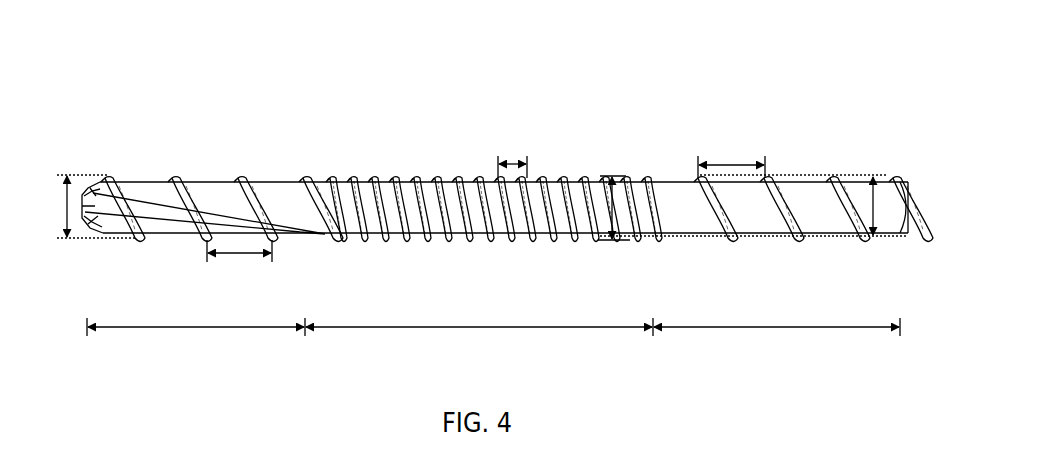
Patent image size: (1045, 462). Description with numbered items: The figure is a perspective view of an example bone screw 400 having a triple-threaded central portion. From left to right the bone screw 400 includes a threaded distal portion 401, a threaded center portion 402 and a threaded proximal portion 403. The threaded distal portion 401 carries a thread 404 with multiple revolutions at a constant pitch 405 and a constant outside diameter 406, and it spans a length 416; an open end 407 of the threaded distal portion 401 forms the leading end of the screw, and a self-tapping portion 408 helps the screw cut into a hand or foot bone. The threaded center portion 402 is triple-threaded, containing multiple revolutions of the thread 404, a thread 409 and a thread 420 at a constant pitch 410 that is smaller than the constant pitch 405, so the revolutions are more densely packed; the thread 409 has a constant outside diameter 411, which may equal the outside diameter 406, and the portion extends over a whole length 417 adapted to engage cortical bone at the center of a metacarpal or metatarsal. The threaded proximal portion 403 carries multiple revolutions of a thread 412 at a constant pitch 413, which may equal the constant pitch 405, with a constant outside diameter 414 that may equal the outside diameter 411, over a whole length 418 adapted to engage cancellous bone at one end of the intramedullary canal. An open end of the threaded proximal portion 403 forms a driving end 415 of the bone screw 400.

The bone screw 400 is at (366, 50).
The threaded distal portion 401 is at (219, 127).
The threaded center portion 402 is at (456, 107).
The threaded proximal portion 403 is at (769, 104).
The thread 404 is at (175, 180).
The constant pitch 405 is at (245, 258).
The constant outside diameter 406 is at (63, 205).
The open end 407 is at (87, 218).
The self-tapping portion 408 is at (130, 195).
The thread 409 is at (417, 179).
The constant pitch 410 is at (510, 161).
The constant outside diameter 411 is at (613, 204).
The thread 412 is at (831, 179).
The constant pitch 413 is at (733, 162).
The constant outside diameter 414 is at (879, 182).
The driving end 415 is at (909, 203).
The length 416 is at (198, 329).
The whole length 417 is at (463, 329).
The whole length 418 is at (787, 329).
The thread 420 is at (393, 179).